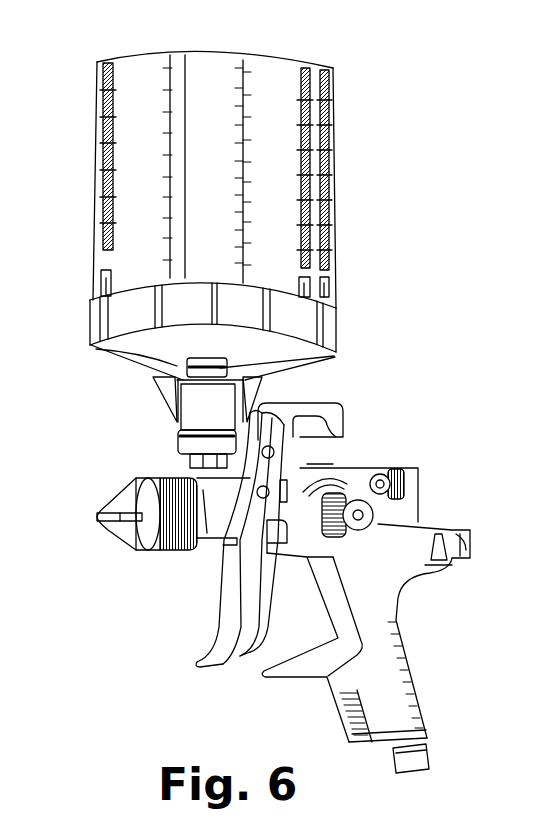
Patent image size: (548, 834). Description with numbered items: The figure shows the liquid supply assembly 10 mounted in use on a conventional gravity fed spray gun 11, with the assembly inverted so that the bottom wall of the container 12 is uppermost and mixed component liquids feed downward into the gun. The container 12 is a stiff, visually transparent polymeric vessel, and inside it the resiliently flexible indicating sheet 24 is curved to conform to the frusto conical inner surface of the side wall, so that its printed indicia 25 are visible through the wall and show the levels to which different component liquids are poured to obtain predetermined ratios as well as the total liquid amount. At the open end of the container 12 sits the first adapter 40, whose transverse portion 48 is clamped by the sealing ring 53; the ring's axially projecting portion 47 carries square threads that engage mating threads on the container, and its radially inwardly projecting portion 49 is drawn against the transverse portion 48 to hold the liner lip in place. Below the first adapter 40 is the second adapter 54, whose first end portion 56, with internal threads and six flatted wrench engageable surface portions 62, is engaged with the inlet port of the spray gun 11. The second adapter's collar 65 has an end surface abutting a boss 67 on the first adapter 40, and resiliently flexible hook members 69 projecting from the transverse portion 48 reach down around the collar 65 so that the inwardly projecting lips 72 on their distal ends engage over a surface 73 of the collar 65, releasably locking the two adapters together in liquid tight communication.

The liquid supply assembly 10 is at (178, 54).
The spray gun 11 is at (413, 618).
The container 12 is at (318, 61).
The indicating sheet 24 is at (288, 169).
The indicia 25 is at (97, 129).
The first adapter 40 is at (176, 362).
The axially projecting portion 47 is at (90, 315).
The transverse portion 48 is at (137, 360).
The radially inwardly projecting portion 49 is at (110, 352).
The sealing ring 53 is at (333, 328).
The second adapter 54 is at (177, 433).
The first end portion 56 is at (210, 453).
The flatted wrench engageable surface portions 62 is at (192, 449).
The collar 65 is at (92, 344).
The boss 67 is at (334, 356).
The hook members 69 is at (160, 405).
The lips 72 is at (172, 408).
The surface 73 is at (183, 402).